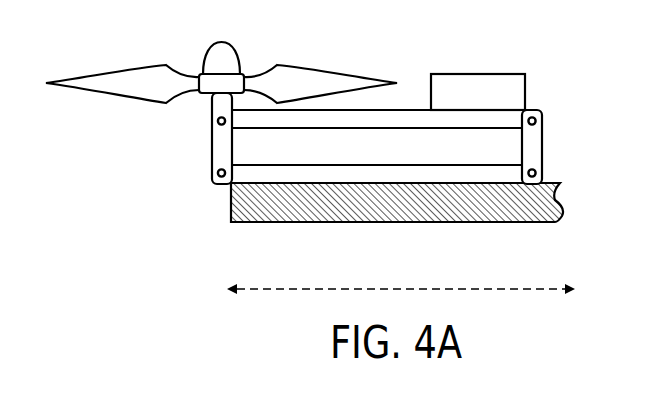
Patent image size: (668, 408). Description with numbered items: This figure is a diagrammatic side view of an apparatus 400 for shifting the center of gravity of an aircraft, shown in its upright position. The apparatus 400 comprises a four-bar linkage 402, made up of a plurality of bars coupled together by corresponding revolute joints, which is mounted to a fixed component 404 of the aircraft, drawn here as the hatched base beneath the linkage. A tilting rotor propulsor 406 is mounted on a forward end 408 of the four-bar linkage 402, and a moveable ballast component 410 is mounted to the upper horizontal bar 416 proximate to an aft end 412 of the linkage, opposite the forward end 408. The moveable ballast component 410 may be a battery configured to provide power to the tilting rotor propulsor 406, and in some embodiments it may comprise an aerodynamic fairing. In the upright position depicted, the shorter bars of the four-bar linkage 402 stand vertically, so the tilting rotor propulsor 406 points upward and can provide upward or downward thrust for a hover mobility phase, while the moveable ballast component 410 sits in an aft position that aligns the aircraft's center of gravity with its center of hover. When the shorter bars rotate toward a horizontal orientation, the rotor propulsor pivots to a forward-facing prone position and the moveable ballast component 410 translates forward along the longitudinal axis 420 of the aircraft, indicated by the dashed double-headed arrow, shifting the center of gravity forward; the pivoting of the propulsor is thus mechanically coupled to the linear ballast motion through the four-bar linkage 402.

The apparatus 400 is at (570, 49).
The four-bar linkage 402 is at (536, 110).
The fixed component 404 is at (451, 221).
The tilting rotor propulsor 406 is at (221, 45).
The forward end 408 is at (184, 150).
The moveable ballast component 410 is at (448, 74).
The aft end 412 is at (603, 162).
The upper horizontal bar 416 is at (404, 110).
The longitudinal axis 420 is at (254, 287).